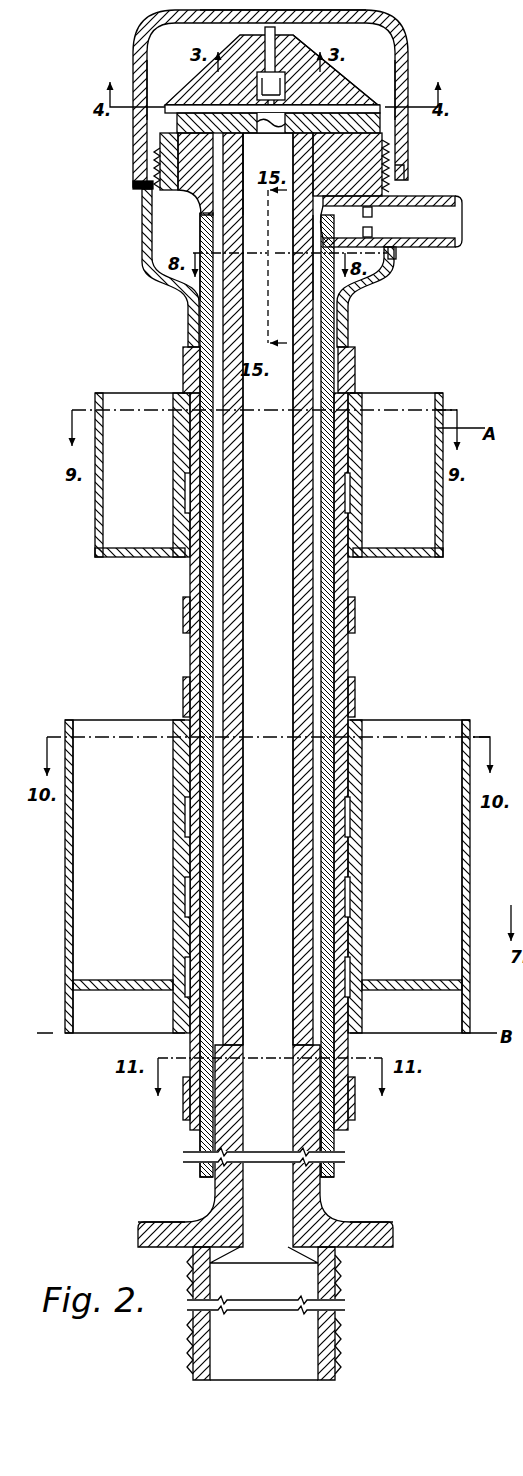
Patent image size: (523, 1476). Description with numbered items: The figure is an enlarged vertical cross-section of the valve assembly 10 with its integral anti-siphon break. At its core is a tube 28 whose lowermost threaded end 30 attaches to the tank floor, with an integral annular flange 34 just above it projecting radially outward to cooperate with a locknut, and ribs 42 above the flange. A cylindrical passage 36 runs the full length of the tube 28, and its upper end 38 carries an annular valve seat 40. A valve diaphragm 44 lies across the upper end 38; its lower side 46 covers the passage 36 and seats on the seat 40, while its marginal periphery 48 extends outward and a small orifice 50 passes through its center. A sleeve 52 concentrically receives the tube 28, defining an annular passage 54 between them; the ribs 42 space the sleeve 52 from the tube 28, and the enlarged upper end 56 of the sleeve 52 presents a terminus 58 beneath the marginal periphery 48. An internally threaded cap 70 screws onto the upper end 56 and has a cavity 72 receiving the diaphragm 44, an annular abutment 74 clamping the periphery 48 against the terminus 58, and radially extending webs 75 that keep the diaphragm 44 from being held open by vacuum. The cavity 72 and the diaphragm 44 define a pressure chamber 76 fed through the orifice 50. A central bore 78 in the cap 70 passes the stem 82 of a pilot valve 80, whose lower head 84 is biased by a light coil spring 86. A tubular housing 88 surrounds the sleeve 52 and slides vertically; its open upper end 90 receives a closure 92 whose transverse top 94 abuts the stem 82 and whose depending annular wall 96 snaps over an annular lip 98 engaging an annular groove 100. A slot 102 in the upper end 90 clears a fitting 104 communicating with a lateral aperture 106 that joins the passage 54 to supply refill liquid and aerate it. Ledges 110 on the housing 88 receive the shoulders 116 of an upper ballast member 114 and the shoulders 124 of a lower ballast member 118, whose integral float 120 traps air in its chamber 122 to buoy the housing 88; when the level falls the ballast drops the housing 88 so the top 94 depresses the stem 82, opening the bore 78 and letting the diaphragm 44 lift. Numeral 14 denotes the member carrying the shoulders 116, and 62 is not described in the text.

The valve assembly 10 is at (366, 387).
The member 14 is at (372, 191).
The tube 28 is at (332, 591).
The lowermost threaded end 30 is at (346, 1327).
The annular flange 34 is at (383, 1223).
The cylindrical passage 36 is at (272, 652).
The upper end 38 is at (268, 589).
The annular valve seat 40 is at (255, 174).
The ribs 42 is at (314, 1134).
The valve diaphragm 44 is at (167, 100).
The lower side 46 is at (347, 164).
The marginal periphery 48 is at (383, 130).
The small orifice 50 is at (268, 147).
The sleeve 52 is at (350, 343).
The annular passage 54 is at (318, 294).
The upper end of the sleeve 56 is at (206, 200).
The terminus 58 is at (158, 186).
The section 62 is at (515, 847).
The cap 70 is at (147, 66).
The cavity 72 is at (360, 96).
The annular abutment 74 is at (160, 139).
The radially extending webs 75 is at (362, 108).
The pressure chamber 76 is at (195, 174).
The central bore 78 is at (300, 62).
The pilot valve 80 is at (262, 30).
The stem 82 is at (258, 86).
The lower head 84 is at (284, 89).
The coil spring 86 is at (338, 100).
The tubular housing 88 is at (184, 652).
The upper end 90 is at (147, 247).
The closure 92 is at (131, 45).
The transverse top 94 is at (372, 12).
The depending annular wall 96 is at (412, 74).
The annular lip 98 is at (400, 165).
The annular groove 100 is at (138, 176).
The slot 102 is at (398, 260).
The fitting 104 is at (462, 199).
The lateral aperture 106 is at (334, 226).
The ledges 110 is at (354, 696).
The upper ballast member 114 is at (452, 517).
The shoulders 116 is at (173, 407).
The lower ballast member 118 is at (477, 719).
The float 120 is at (447, 1036).
The chamber 122 is at (453, 1016).
The shoulders 124 is at (185, 717).